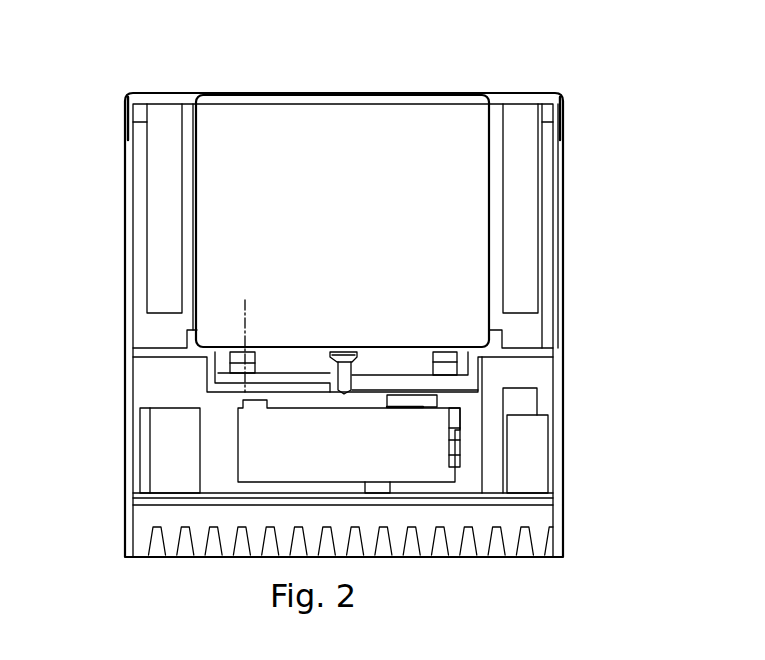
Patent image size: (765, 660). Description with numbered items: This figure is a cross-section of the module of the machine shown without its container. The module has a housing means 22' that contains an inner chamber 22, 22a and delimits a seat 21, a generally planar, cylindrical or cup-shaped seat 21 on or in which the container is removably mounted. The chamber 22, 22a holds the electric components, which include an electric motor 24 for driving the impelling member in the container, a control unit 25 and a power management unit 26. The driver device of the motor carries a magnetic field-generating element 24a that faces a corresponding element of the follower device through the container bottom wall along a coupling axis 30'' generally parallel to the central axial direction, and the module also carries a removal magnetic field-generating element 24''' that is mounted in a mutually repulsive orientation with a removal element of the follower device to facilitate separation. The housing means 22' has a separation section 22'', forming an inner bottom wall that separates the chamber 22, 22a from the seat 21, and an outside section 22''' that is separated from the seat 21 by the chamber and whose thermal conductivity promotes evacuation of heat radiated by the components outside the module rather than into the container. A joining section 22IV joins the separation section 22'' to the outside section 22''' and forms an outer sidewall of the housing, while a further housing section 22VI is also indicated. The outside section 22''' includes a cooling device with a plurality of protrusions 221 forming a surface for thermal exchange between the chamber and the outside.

The seat 21 is at (371, 135).
The inner chamber 22 is at (302, 325).
The housing means 22' is at (125, 217).
The separation section 22'' is at (362, 247).
The outside section 22''' is at (297, 551).
The inner chamber 22a is at (153, 335).
The joining section 22IV is at (560, 290).
The housing right shelf 22VI is at (535, 351).
The electric motor 24 is at (349, 444).
The magnetic field-generating element 24a is at (258, 280).
The removal magnetic field-generating element 24''' is at (309, 332).
The control unit 25 is at (540, 435).
The power management unit 26 is at (172, 438).
The coupling axis 30'' is at (346, 286).
The protrusions 221 is at (185, 527).